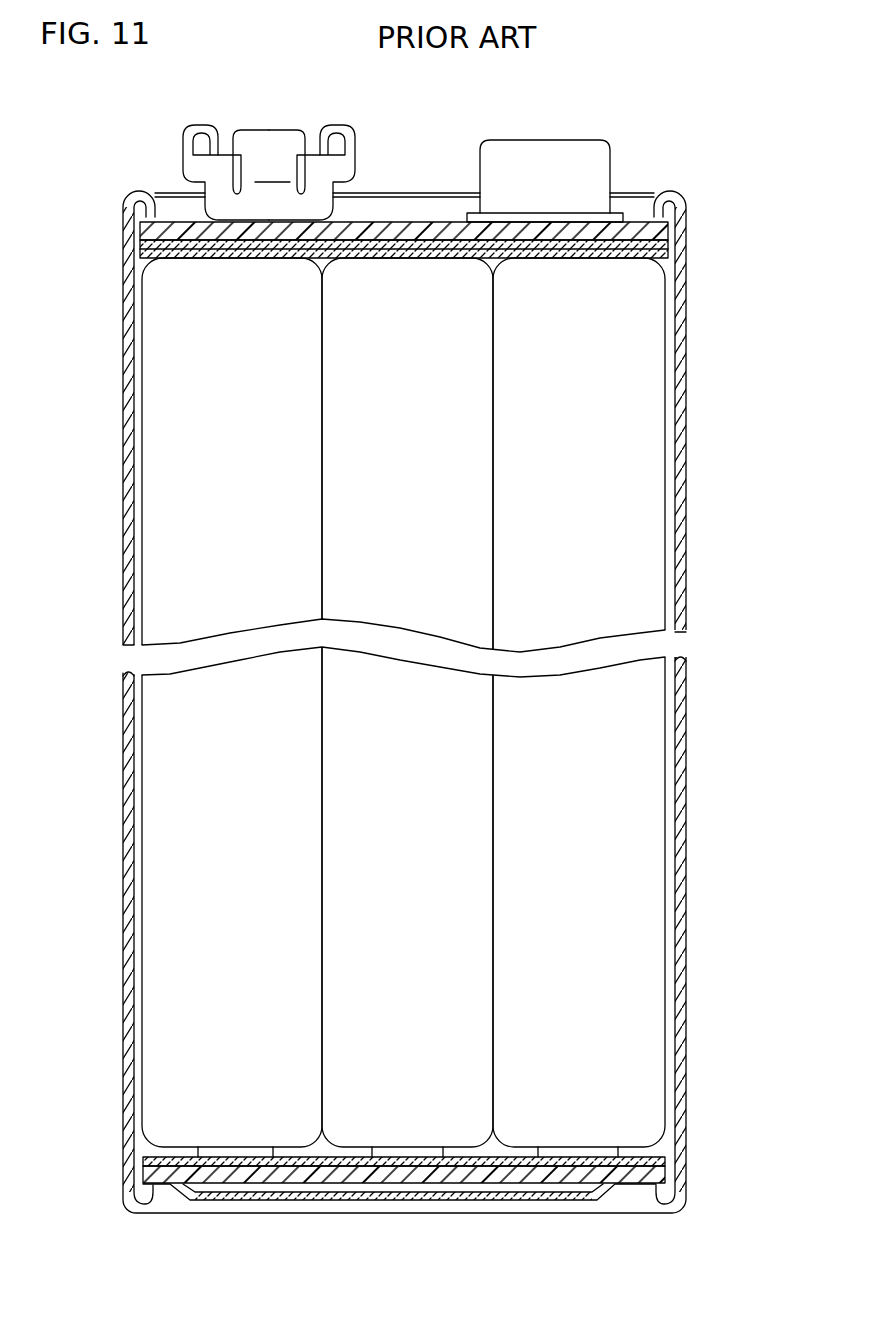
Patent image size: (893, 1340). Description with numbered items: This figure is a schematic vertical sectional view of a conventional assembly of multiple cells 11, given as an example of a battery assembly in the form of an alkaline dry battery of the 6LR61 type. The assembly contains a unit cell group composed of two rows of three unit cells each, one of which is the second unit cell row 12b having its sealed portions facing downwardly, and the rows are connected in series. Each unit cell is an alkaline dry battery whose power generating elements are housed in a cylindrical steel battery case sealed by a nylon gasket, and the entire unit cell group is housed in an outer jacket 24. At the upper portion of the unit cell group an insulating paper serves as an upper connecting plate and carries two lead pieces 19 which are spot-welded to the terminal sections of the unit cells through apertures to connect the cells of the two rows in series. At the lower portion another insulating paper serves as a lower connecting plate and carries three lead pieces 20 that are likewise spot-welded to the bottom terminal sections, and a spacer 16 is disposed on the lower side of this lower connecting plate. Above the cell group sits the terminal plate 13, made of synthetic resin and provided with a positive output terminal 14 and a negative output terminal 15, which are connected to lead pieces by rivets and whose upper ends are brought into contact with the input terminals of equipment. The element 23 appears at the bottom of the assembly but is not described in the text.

The assembly of multiple cells 11 is at (650, 163).
The second unit cell row 12b is at (632, 425).
The terminal plate 13 is at (400, 230).
The positive output terminal 14 is at (534, 167).
The negative output terminal 15 is at (270, 142).
The spacer 16 is at (160, 1171).
The lead pieces 19 is at (581, 258).
The lead pieces 20 is at (598, 1137).
The bottom strip 23 is at (571, 1199).
The outer jacket 24 is at (683, 961).